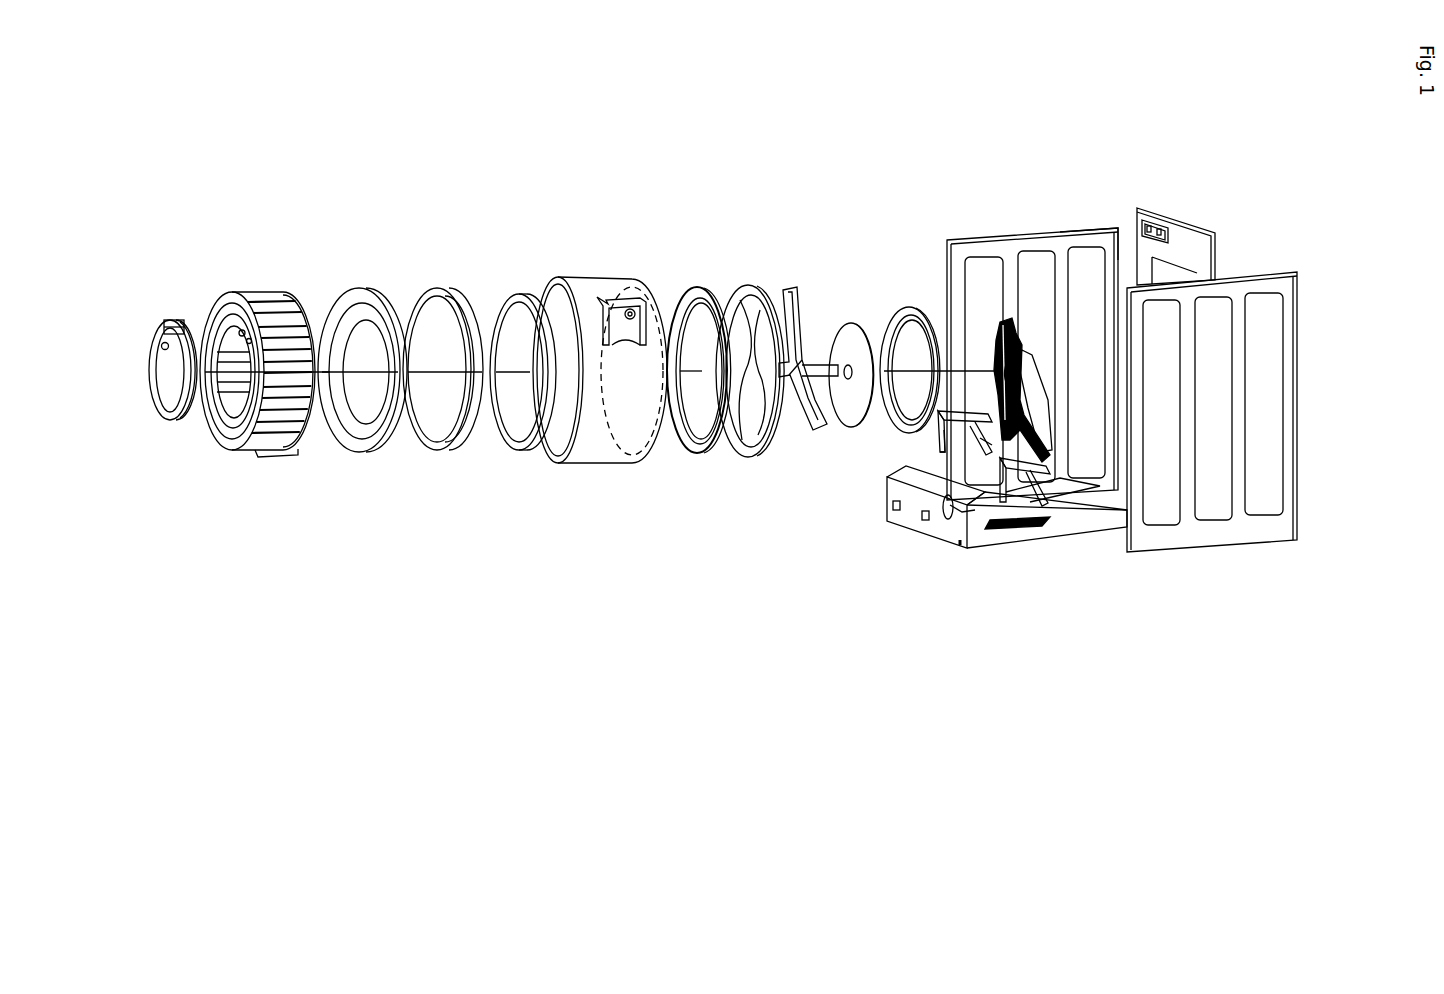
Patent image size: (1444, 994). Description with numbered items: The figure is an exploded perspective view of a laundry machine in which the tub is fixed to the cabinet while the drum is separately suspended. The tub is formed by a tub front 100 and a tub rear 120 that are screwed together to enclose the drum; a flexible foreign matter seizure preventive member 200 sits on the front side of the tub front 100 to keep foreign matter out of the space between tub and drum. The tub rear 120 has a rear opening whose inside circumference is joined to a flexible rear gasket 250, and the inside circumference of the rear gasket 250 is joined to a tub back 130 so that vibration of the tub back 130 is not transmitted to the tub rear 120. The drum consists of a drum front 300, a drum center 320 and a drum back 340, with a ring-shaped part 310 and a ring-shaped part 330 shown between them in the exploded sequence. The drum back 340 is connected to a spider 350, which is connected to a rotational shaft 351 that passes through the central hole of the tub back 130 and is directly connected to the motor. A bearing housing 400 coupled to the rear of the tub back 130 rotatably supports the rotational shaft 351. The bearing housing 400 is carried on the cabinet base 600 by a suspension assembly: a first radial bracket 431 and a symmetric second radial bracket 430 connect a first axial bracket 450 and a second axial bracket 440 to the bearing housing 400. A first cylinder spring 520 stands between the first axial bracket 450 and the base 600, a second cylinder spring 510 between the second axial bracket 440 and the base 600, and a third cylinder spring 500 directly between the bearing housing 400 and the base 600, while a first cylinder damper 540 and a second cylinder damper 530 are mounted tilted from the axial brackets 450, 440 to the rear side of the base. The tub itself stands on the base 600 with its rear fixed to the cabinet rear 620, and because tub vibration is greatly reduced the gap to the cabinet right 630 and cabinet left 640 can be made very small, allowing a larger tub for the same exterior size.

The tub front 100 is at (267, 300).
The tub rear 120 is at (585, 285).
The tub back 130 is at (842, 337).
The foreign matter seizure preventive member 200 is at (157, 412).
The rear gasket 250 is at (907, 307).
The drum front 300 is at (353, 315).
The ring 310 is at (428, 297).
The drum center 320 is at (515, 310).
The sealing ring 330 is at (690, 297).
The drum back 340 is at (728, 443).
The spider 350 is at (813, 433).
The rotational shaft 351 is at (822, 365).
The bearing housing 400 is at (1013, 330).
The second radial bracket 430 is at (987, 405).
The first radial bracket 431 is at (1055, 448).
The second axial bracket 440 is at (974, 405).
The first axial bracket 450 is at (1013, 493).
The third cylinder spring 500 is at (1040, 442).
The second cylinder spring 510 is at (937, 443).
The first cylinder spring 520 is at (962, 512).
The second cylinder damper 530 is at (985, 442).
The first cylinder damper 540 is at (1048, 476).
The cabinet base 600 is at (1070, 530).
The cabinet rear 620 is at (1182, 230).
The cabinet right 630 is at (1070, 242).
The cabinet left 640 is at (1240, 285).